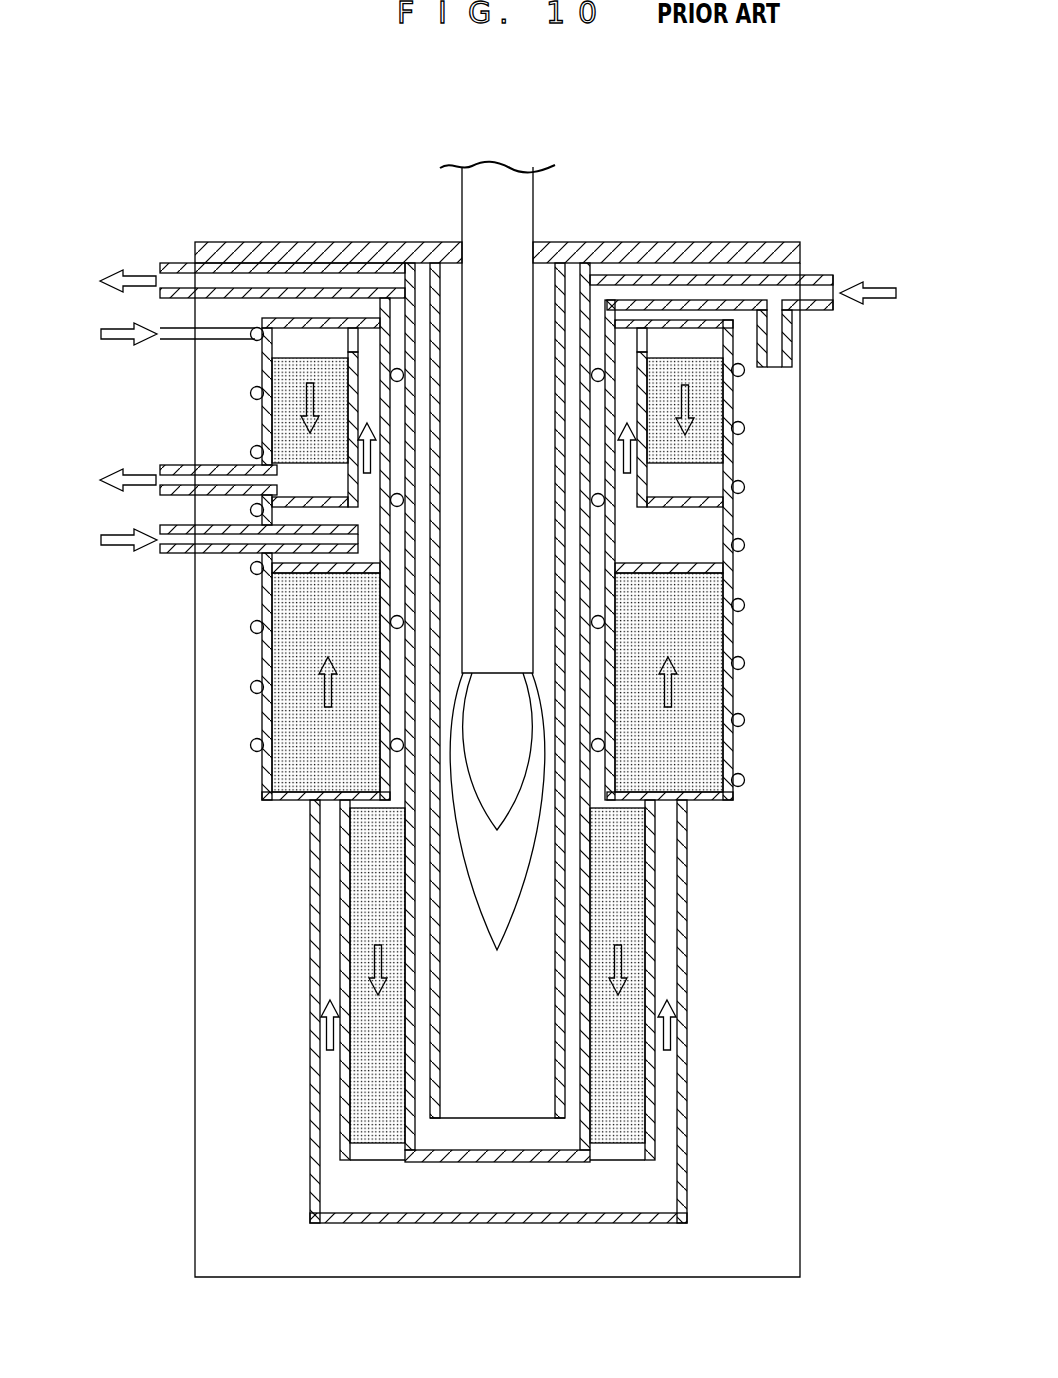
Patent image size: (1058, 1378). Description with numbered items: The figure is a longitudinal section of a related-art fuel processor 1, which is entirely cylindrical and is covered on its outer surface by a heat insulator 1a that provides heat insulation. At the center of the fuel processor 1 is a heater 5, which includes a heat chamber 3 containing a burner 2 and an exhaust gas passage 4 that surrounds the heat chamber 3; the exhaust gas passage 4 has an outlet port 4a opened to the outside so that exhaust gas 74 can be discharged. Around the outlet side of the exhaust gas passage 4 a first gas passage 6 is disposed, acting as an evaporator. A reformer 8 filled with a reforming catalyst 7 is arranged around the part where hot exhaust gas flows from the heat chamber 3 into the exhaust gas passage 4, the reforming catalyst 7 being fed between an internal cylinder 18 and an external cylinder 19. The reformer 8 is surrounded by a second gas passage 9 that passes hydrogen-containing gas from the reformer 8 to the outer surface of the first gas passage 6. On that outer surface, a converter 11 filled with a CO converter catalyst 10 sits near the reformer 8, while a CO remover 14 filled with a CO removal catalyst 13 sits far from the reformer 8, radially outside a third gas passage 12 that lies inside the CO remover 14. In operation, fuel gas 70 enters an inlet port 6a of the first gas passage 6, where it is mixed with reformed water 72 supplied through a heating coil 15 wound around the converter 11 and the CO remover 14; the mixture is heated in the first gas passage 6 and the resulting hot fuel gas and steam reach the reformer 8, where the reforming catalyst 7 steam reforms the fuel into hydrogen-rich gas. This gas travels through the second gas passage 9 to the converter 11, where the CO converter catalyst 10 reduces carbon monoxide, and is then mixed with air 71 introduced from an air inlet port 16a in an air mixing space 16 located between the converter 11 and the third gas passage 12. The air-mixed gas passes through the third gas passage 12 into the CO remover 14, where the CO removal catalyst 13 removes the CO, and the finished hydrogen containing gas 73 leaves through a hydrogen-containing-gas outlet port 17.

The fuel processor 1 is at (245, 212).
The heat insulator 1a is at (195, 960).
The burner 2 is at (497, 200).
The heat chamber 3 is at (507, 1052).
The exhaust gas passage 4 is at (572, 1082).
The outlet port 4a is at (175, 275).
The heater 5 is at (467, 1163).
The first gas passage 6 is at (598, 540).
The inlet port 6a is at (806, 293).
The reforming catalyst 7 is at (615, 875).
The reformer 8 is at (662, 957).
The second gas passage 9 is at (668, 1098).
The CO converter catalyst 10 is at (713, 760).
The converter 11 is at (745, 690).
The third gas passage 12 is at (627, 490).
The CO removal catalyst 13 is at (713, 450).
The CO remover 14 is at (742, 393).
The heating coil 15 is at (253, 393).
The air mixing space 16 is at (285, 517).
The air inlet port 16a is at (182, 540).
The hydrogen-containing-gas outlet port 17 is at (170, 465).
The internal cylinder 18 is at (545, 1163).
The external cylinder 19 is at (648, 1163).
The fuel gas 70 is at (878, 293).
The air 71 is at (100, 540).
The reformed water 72 is at (100, 332).
The hydrogen containing gas 73 is at (100, 480).
The exhaust gas 74 is at (102, 279).